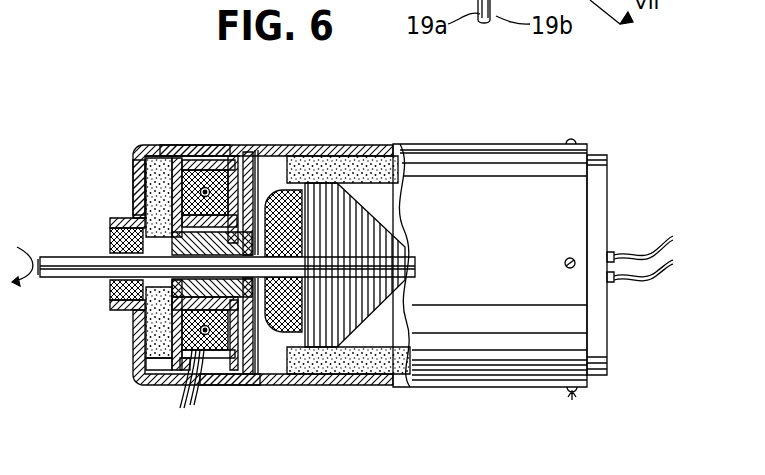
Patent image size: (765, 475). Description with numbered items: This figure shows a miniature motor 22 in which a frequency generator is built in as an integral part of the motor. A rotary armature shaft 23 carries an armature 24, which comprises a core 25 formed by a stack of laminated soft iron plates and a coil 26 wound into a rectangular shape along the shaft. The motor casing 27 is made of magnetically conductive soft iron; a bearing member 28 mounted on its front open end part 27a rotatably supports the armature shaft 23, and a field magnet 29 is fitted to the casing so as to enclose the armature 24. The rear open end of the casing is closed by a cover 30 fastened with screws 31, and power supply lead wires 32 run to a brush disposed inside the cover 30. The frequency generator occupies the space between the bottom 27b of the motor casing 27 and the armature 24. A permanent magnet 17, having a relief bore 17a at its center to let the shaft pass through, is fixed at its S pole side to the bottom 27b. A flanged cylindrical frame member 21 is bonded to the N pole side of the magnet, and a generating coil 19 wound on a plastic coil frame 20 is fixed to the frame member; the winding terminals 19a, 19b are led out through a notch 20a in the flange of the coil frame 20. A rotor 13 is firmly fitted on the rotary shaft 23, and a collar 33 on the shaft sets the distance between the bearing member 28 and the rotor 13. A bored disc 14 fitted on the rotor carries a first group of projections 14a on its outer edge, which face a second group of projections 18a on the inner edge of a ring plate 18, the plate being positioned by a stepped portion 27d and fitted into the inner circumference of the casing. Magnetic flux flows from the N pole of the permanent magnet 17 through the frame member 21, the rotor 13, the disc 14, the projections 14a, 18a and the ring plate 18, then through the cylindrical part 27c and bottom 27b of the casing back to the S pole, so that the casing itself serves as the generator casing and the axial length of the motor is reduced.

The rotor 13 is at (159, 258).
The bored disc 14 is at (255, 205).
The first group of projections 14a is at (255, 163).
The permanent magnet 17 is at (160, 344).
The relief bore 17a is at (136, 300).
The ring plate 18 is at (246, 385).
The second group of projections 18a is at (262, 384).
The generating coil 19 is at (200, 170).
The winding terminal 19a is at (178, 398).
The winding terminal 19b is at (190, 400).
The coil frame 20 is at (232, 160).
The notch 20a is at (178, 364).
The flanged cylindrical frame member 21 is at (165, 165).
The miniature motor 22 is at (497, 143).
The rotary armature shaft 23 is at (44, 280).
The armature 24 is at (400, 314).
The core 25 is at (336, 200).
The coil 26 is at (298, 372).
The motor casing 27 is at (295, 150).
The front open end part 27a is at (112, 228).
The bottom 27b is at (134, 180).
The cylindrical part 27c is at (178, 158).
The stepped portion 27d is at (233, 384).
The bearing member 28 is at (180, 280).
The field magnet 29 is at (364, 375).
The cover 30 is at (600, 177).
The screws 31 is at (571, 139).
The power supply lead wires 32 is at (660, 245).
The collar 33 is at (112, 242).